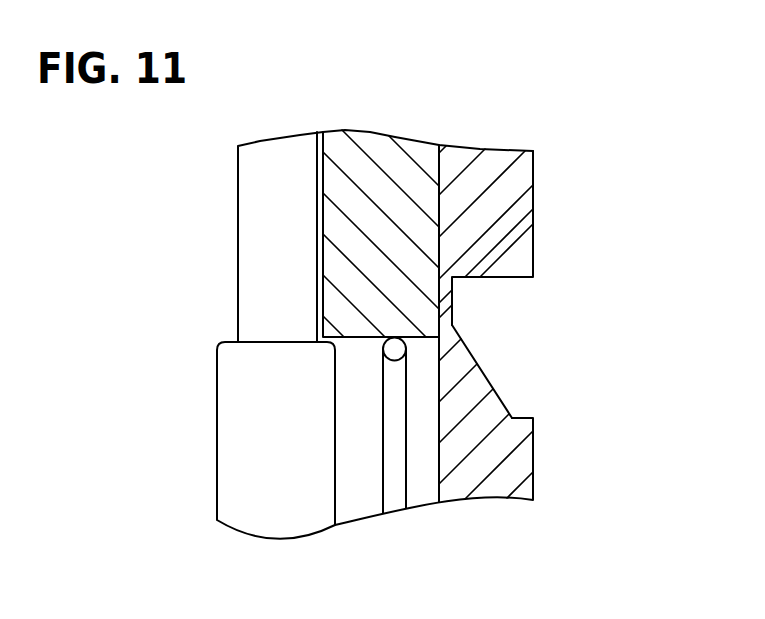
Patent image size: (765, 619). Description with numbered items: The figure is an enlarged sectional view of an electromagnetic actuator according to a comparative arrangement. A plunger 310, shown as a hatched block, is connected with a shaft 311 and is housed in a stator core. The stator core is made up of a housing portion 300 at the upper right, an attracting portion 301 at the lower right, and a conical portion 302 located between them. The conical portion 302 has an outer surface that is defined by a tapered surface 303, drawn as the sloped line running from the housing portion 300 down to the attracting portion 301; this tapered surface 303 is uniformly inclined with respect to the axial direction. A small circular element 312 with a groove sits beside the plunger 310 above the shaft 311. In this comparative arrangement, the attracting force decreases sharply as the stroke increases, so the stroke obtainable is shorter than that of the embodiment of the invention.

The plunger 310 is at (385, 158).
The housing portion 300 is at (515, 208).
The tapered surface 303 is at (473, 365).
The conical portion 302 is at (470, 402).
The attracting portion 301 is at (497, 460).
The shaft 311 is at (237, 439).
The O-ring seal 312 is at (395, 500).